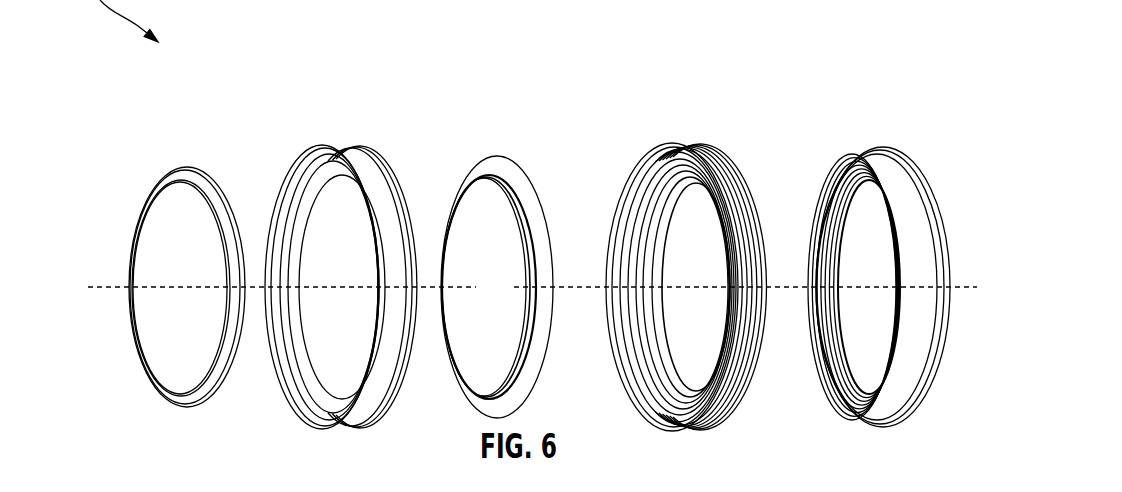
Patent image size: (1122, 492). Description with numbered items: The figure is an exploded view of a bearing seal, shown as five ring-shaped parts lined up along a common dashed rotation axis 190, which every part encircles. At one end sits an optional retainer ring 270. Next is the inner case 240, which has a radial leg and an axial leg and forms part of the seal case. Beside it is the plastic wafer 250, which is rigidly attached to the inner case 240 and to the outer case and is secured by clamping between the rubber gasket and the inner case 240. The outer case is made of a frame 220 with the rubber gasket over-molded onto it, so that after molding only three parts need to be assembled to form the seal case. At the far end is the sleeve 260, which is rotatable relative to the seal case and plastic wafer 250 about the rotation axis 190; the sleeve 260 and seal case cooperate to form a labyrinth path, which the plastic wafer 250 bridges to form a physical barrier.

The rotation axis 190 is at (532, 287).
The retainer ring 270 is at (190, 161).
The inner case 240 is at (317, 150).
The plastic wafer 250 is at (478, 146).
The frame 220 is at (672, 143).
The sleeve 260 is at (876, 142).